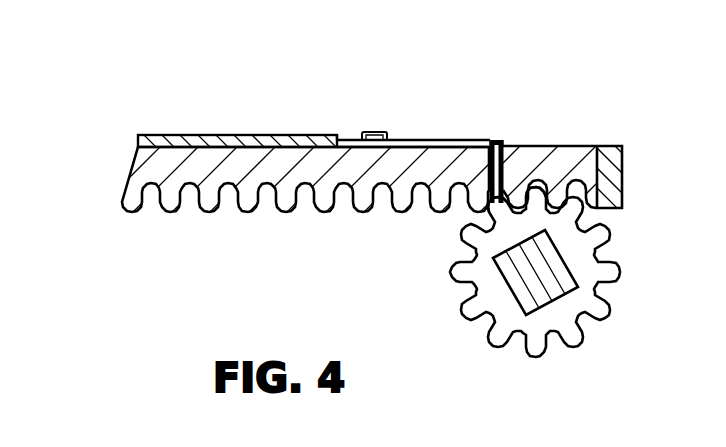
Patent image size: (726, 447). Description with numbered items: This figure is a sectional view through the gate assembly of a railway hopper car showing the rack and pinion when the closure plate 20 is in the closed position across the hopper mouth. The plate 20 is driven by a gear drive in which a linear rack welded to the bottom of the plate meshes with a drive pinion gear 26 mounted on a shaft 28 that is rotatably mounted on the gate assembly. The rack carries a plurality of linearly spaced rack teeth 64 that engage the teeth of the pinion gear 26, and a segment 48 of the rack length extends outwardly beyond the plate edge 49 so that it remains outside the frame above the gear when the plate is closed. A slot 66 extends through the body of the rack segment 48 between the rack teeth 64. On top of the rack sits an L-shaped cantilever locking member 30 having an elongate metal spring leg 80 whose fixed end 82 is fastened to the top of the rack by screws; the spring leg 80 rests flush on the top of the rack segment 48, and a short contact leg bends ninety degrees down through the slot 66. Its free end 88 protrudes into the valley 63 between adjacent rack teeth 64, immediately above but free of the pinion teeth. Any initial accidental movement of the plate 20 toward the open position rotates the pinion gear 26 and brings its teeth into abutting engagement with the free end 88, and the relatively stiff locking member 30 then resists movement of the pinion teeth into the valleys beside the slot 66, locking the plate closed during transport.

The closure plate 20 is at (164, 135).
The plate edge 49 is at (338, 136).
The fixed end 82 is at (347, 141).
The cantilever locking member 30 is at (418, 116).
The spring leg 80 is at (428, 140).
The slot 66 is at (504, 141).
The rack teeth 64 is at (528, 192).
The valley 63 is at (508, 212).
The drive pinion gear 26 is at (600, 302).
The shaft 28 is at (510, 284).
The rack segment 48 is at (366, 212).
The free end 88 is at (490, 214).